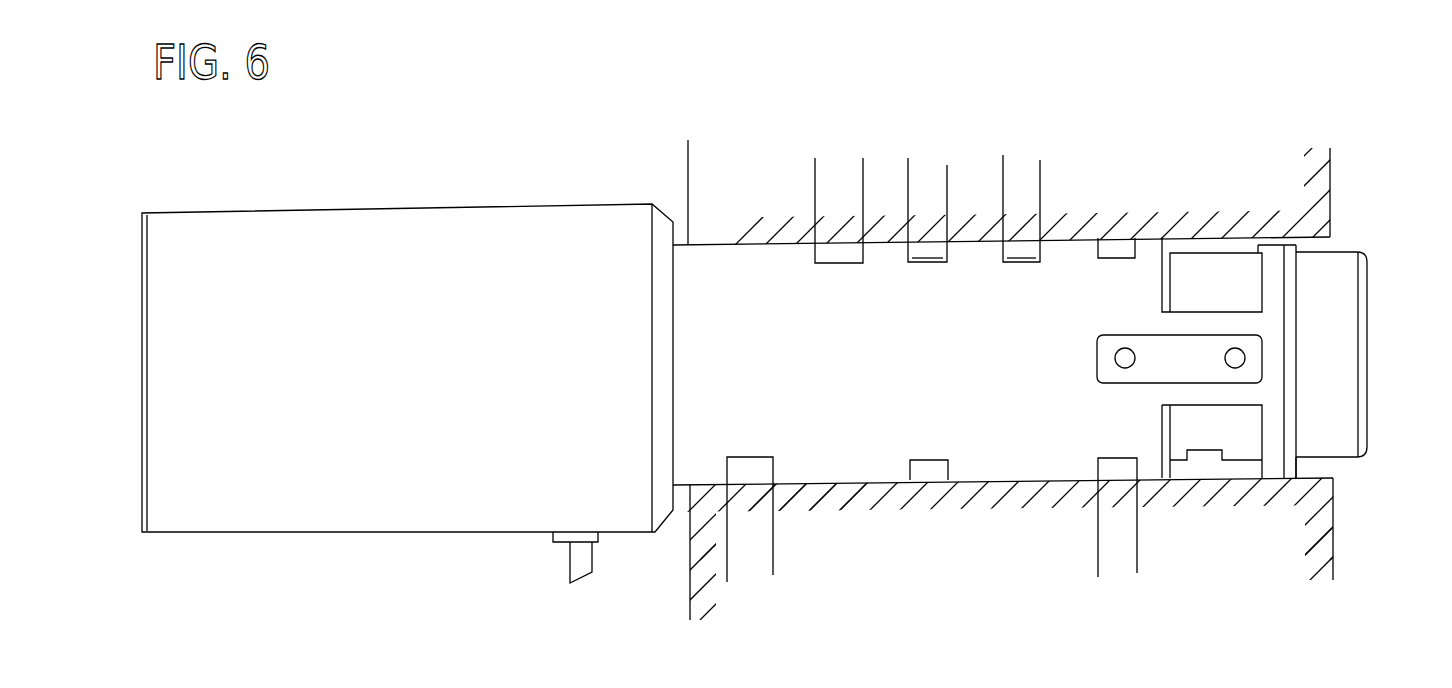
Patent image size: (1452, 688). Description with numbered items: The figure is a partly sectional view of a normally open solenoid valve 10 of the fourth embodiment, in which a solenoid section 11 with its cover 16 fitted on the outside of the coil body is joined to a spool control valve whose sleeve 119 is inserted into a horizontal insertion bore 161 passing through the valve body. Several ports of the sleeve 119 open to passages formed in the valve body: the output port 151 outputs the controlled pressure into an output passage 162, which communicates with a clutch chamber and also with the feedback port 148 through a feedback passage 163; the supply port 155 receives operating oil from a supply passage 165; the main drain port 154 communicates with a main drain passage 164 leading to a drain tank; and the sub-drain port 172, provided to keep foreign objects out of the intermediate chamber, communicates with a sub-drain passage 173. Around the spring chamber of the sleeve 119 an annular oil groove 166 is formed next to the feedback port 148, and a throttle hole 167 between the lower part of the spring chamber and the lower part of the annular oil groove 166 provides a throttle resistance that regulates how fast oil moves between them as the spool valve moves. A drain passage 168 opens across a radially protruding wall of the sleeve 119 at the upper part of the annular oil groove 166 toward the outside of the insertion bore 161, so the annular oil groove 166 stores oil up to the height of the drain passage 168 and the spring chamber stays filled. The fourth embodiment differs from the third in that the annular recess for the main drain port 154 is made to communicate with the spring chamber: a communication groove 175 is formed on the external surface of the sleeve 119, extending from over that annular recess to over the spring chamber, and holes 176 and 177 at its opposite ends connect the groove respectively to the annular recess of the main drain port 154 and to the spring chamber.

The solenoid valve 10 is at (627, 190).
The solenoid section 11 is at (493, 199).
The cover 16 is at (420, 237).
The feedback passage 163 is at (828, 190).
The feedback port 148 is at (850, 220).
The supply passage 165 is at (930, 183).
The supply port 155 is at (937, 253).
The output passage 162 is at (1027, 193).
The output port 151 is at (1033, 253).
The drain passage 168 is at (1317, 243).
The annular oil groove 166 is at (1242, 430).
The throttle hole 167 is at (1196, 462).
The communication groove 175 is at (1193, 350).
The hole 176 is at (1125, 348).
The hole 177 is at (1233, 348).
The sleeve 119 is at (1355, 295).
The insertion bore 161 is at (1313, 472).
The sub-drain passage 173 is at (762, 563).
The sub-drain port 172 is at (757, 473).
The main drain port 154 is at (1110, 470).
The main drain passage 164 is at (1122, 565).